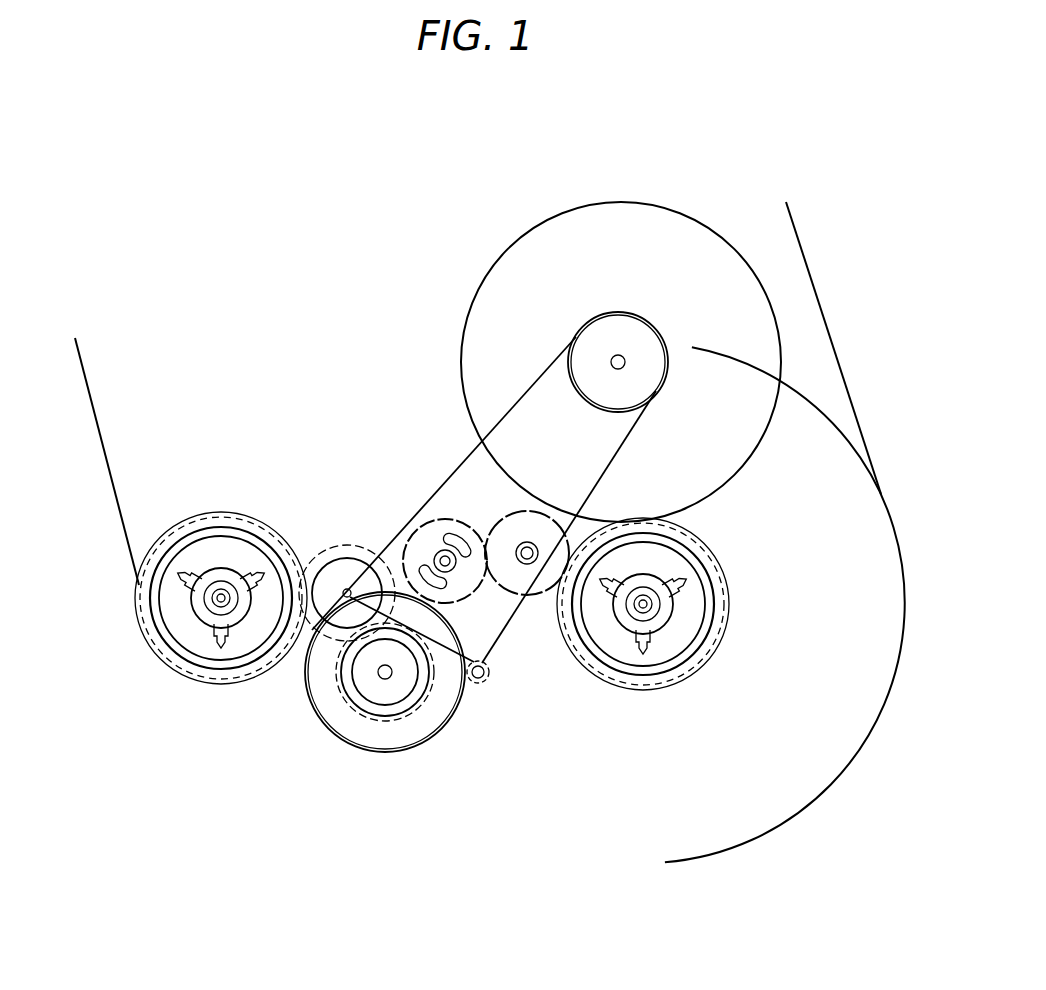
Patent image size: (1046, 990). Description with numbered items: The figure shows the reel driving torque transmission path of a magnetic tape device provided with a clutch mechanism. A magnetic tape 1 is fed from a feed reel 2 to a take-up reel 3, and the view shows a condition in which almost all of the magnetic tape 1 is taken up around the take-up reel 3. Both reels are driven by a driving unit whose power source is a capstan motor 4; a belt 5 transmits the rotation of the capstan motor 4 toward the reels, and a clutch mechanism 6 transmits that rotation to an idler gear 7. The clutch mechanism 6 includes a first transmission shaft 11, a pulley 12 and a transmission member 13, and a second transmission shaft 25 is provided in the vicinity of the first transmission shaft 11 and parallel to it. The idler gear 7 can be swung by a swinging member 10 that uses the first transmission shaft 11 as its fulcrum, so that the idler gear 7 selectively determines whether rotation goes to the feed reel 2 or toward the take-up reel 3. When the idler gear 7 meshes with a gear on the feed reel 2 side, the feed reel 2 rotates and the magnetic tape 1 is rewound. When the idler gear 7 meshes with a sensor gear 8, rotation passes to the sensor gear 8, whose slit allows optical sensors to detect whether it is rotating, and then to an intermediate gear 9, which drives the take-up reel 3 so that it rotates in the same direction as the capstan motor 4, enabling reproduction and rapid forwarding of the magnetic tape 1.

The magnetic tape 1 is at (108, 472).
The feed reel 2 is at (185, 640).
The take-up reel 3 is at (673, 647).
The capstan motor 4 is at (653, 233).
The belt 5 is at (470, 460).
The clutch mechanism 6 is at (385, 768).
The idler gear 7 is at (343, 547).
The sensor gear 8 is at (438, 518).
The intermediate gear 9 is at (533, 597).
The swinging member 10 is at (313, 632).
The first transmission shaft 11 is at (390, 675).
The pulley 12 is at (343, 740).
The transmission member 13 is at (407, 715).
The second transmission shaft 25 is at (487, 680).